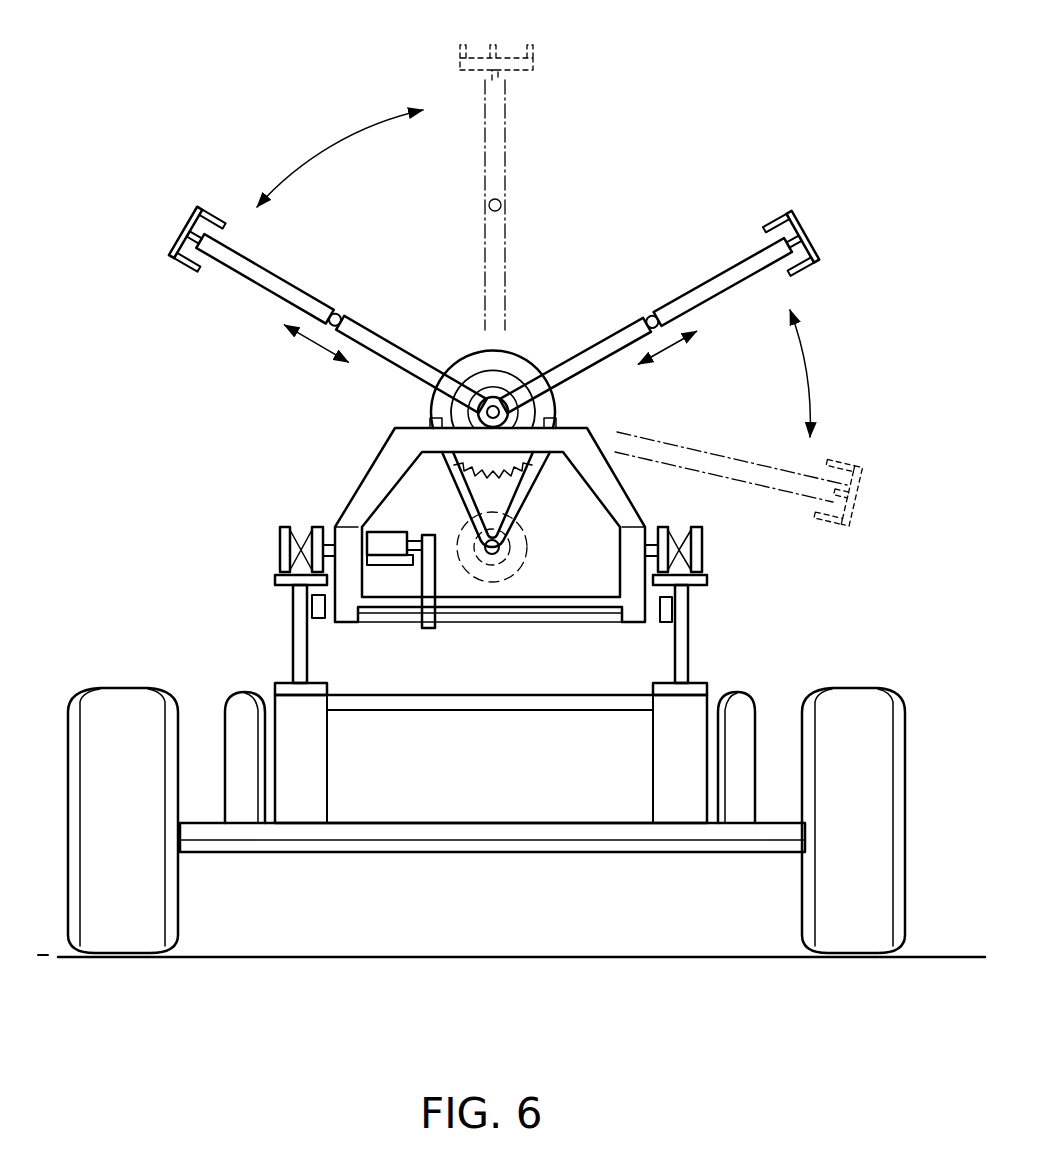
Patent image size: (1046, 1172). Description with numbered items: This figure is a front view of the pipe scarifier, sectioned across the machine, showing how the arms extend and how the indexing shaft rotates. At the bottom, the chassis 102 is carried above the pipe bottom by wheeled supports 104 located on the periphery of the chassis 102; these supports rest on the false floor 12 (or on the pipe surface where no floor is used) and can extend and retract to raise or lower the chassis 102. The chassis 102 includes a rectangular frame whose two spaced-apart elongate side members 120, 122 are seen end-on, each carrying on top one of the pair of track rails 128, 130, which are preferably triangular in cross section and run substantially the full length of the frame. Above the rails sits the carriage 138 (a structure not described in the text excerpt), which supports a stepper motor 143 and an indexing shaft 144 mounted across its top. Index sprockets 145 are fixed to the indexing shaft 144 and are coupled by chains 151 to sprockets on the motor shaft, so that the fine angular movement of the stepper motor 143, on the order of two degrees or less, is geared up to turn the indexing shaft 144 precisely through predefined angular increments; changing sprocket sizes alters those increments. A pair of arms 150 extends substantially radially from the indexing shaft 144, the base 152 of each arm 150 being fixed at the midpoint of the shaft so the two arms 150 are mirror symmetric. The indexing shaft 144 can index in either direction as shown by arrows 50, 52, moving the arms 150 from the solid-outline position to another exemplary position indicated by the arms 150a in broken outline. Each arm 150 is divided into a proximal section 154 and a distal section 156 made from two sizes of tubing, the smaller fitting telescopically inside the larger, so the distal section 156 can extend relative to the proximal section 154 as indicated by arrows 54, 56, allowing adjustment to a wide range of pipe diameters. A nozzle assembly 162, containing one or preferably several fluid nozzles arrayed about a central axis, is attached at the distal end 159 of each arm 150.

The false floor 12 is at (470, 958).
The arrow 50 is at (333, 145).
The arrow 52 is at (808, 363).
The arrow 54 is at (313, 345).
The arrow 56 is at (670, 348).
The chassis 102 is at (489, 769).
The wheeled supports 104 is at (140, 686).
The elongate side member 120 is at (293, 637).
The elongate side member 122 is at (690, 633).
The rail 128 is at (280, 542).
The rail 130 is at (702, 540).
The mounting frame 138 is at (458, 528).
The stepper motor 143 is at (515, 574).
The indexing shaft 144 is at (508, 380).
The index sprockets 145 is at (480, 380).
The arms 150 is at (498, 284).
The arms in broken outline 150a is at (518, 128).
The chains 151 is at (428, 406).
The base 152 is at (463, 360).
The proximal section 154 is at (368, 320).
The distal section 156 is at (268, 270).
The distal end 159 is at (178, 256).
The nozzle assembly 162 is at (140, 210).